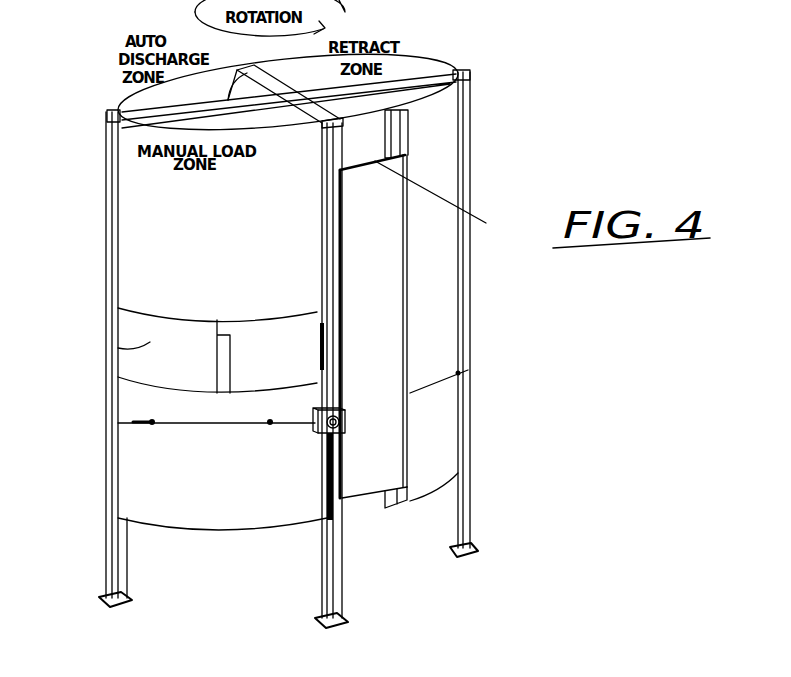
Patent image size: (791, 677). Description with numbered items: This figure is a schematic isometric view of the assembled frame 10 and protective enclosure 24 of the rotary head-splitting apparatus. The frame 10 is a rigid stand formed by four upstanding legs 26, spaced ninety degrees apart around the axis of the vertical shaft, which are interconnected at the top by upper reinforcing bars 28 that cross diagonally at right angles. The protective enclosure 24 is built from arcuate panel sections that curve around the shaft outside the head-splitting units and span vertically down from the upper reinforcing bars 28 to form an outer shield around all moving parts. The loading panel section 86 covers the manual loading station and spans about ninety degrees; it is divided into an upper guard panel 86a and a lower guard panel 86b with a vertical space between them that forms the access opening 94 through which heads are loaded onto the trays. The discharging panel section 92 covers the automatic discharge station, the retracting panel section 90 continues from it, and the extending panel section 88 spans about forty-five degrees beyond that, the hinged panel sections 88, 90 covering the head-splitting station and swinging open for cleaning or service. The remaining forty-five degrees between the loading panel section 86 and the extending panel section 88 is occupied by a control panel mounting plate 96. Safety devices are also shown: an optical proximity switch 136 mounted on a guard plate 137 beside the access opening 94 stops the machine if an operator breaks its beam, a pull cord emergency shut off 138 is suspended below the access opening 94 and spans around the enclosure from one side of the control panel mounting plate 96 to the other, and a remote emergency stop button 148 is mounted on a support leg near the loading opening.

The frame 10 is at (487, 550).
The protective enclosure 24 is at (220, 537).
The upstanding legs 26 is at (118, 566).
The upper reinforcing bars 28 is at (258, 68).
The loading panel section 86 is at (202, 515).
The upper guard panel 86a is at (157, 237).
The lower guard panel 86b is at (148, 510).
The extending panel section 88 is at (438, 133).
The retracting panel section 90 is at (408, 55).
The discharging panel section 92 is at (133, 97).
The access opening 94 is at (150, 345).
The control panel mounting plate 96 is at (363, 498).
The optical proximity switch 136 is at (213, 358).
The guard plate 137 is at (263, 377).
The pull cord emergency shut off 138 is at (192, 425).
The emergency stop button 148 is at (346, 423).